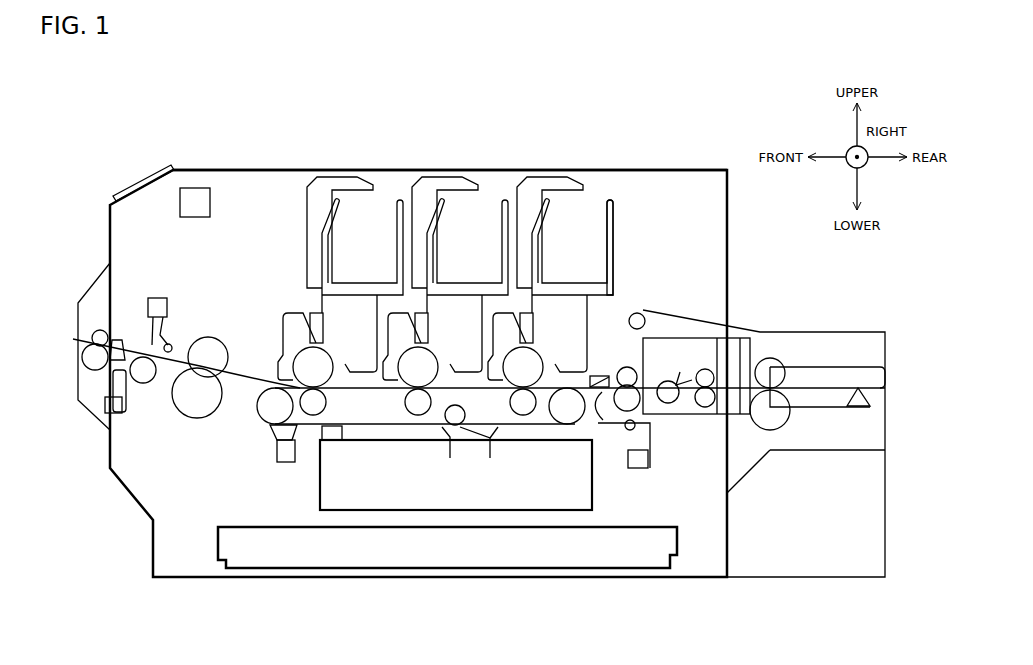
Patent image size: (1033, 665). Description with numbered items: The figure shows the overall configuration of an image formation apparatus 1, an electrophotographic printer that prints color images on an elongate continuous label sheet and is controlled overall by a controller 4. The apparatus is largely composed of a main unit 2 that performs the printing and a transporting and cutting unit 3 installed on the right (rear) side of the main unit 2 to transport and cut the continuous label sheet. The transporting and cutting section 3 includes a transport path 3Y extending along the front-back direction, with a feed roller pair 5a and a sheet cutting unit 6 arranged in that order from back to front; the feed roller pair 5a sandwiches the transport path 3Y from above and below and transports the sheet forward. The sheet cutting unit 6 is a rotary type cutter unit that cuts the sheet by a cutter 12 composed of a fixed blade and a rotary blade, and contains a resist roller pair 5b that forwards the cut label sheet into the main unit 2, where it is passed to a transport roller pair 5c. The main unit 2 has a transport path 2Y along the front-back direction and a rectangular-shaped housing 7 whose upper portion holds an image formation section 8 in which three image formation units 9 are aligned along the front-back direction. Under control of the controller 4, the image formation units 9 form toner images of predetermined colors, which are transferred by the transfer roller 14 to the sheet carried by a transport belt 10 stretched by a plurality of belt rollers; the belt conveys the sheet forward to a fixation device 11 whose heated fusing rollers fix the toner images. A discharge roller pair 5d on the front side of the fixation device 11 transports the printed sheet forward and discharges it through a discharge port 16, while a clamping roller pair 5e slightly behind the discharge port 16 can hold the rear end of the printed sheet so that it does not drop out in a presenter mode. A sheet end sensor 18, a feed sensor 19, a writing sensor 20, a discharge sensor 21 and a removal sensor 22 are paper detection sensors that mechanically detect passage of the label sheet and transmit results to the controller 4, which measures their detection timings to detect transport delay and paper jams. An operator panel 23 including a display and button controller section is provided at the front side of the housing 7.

The image formation apparatus 1 is at (205, 92).
The main unit 2 is at (677, 158).
The transport path 2Y is at (530, 392).
The transporting and cutting unit 3 is at (796, 315).
The transport path 3Y is at (743, 402).
The controller 4 is at (198, 187).
The feed roller pair 5a is at (770, 433).
The resist roller pair 5b is at (707, 410).
The transport roller pair 5c is at (632, 430).
The discharge roller pair 5d is at (134, 345).
The clamping roller pair 5e is at (99, 327).
The sheet cutting unit 6 is at (697, 332).
The housing 7 is at (236, 169).
The image formation section 8 is at (624, 223).
The image formation units 9 is at (350, 180).
The transport belt 10 is at (316, 420).
The fixation device 11 is at (195, 433).
The cutter 12 is at (677, 404).
The transfer roller 14 is at (517, 425).
The discharge port 16 is at (76, 349).
The sheet end sensor 18 is at (863, 407).
The feed sensor 19 is at (733, 402).
The writing sensor 20 is at (603, 426).
The discharge sensor 21 is at (152, 352).
The removal sensor 22 is at (101, 413).
The operator panel 23 is at (140, 186).